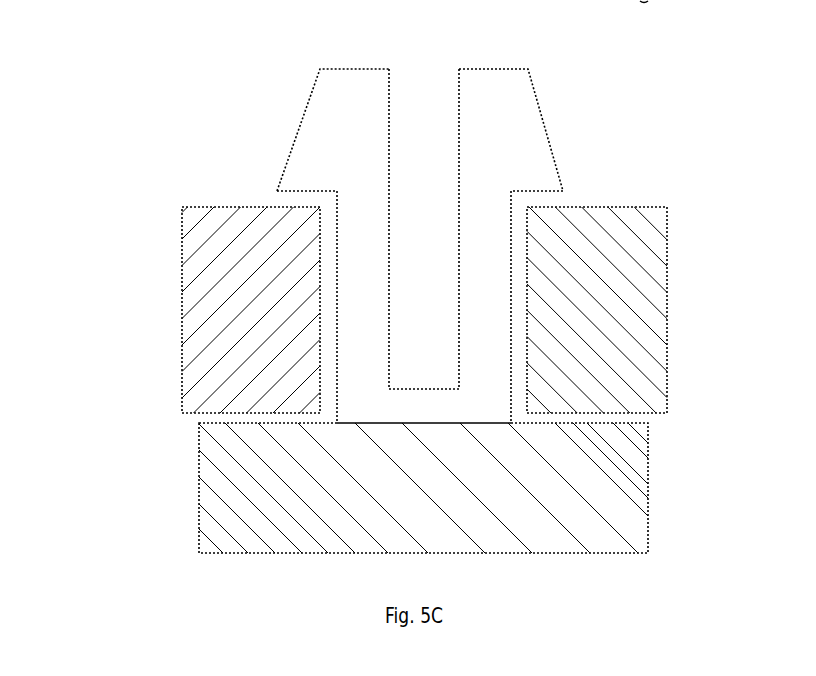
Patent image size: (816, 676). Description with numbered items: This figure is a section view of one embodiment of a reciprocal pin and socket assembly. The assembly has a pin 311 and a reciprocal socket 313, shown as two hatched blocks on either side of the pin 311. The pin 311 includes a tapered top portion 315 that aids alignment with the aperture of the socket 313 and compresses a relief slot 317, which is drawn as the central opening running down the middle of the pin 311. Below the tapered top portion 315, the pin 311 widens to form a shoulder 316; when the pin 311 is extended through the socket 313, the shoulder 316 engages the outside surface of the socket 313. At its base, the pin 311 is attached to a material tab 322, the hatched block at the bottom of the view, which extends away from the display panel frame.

The pin 311 is at (518, 327).
The socket 313 is at (182, 303).
The tapered top portion 315 is at (553, 133).
The shoulder 316 is at (573, 192).
The relief slot 317 is at (428, 70).
The material tab 322 is at (198, 495).